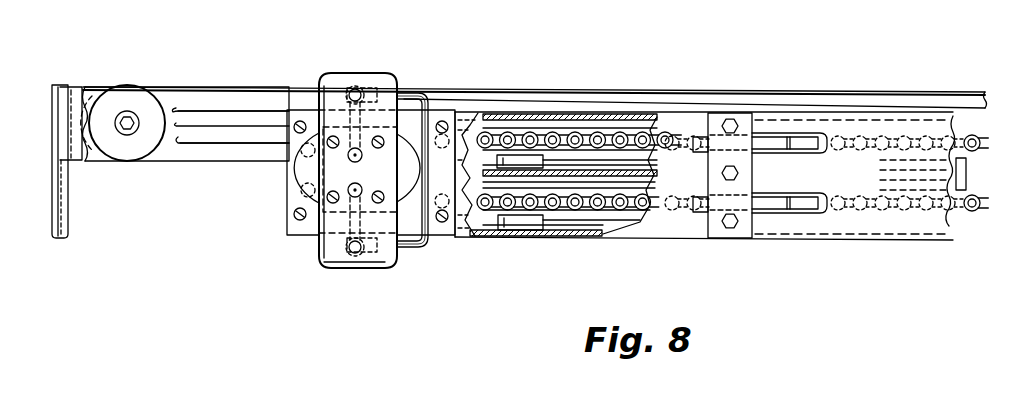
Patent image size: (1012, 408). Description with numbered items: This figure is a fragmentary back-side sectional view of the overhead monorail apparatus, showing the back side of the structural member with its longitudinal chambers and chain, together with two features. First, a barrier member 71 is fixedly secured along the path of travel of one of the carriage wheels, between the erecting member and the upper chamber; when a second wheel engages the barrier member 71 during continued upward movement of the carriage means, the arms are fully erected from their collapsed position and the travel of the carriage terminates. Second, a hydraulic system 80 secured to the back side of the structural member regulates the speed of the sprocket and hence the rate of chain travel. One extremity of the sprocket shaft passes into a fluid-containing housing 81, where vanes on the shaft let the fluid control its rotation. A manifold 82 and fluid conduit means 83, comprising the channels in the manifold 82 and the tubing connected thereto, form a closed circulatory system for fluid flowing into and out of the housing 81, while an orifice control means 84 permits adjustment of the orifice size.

The barrier member 71 is at (533, 162).
The hydraulic system 80 is at (330, 180).
The fluid-containing housing 81 is at (293, 183).
The manifold 82 is at (322, 258).
The fluid conduit means 83 is at (428, 247).
The orifice control means 84 is at (320, 80).